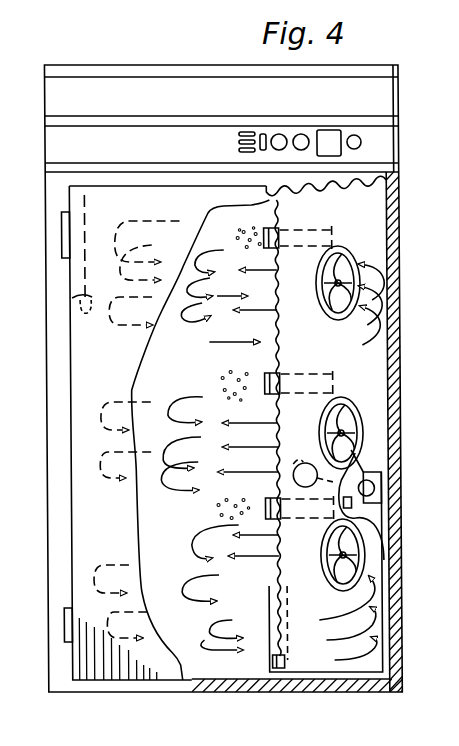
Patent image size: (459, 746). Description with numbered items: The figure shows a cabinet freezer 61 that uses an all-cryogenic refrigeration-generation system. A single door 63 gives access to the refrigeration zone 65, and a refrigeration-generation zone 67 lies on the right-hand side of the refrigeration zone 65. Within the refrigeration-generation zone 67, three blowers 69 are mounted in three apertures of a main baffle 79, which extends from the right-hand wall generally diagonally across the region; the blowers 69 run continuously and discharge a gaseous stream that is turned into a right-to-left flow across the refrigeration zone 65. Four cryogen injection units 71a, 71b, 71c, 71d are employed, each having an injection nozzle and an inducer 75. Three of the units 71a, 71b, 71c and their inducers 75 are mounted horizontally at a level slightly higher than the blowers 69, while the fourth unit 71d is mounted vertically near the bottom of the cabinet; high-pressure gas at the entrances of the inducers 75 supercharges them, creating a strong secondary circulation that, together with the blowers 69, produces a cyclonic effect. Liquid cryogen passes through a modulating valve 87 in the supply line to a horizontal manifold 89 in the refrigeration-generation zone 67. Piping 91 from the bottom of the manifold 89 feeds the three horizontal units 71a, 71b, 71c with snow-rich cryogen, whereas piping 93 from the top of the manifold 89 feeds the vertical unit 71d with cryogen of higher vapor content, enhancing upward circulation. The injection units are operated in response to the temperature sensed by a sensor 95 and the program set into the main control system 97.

The cabinet freezer 61 is at (72, 63).
The door 63 is at (115, 363).
The refrigeration zone 65 is at (183, 376).
The refrigeration-generation zone 67 is at (390, 316).
The blowers 69 is at (357, 265).
The cryogen injection unit 71a is at (345, 221).
The cryogen injection unit 71b is at (347, 381).
The cryogen injection unit 71c is at (340, 510).
The cryogen injection unit 71d is at (272, 662).
The inducer 75 is at (267, 228).
The main baffle 79 is at (317, 354).
The modulating valve 87 is at (310, 460).
The horizontal manifold 89 is at (372, 488).
The piping 91 is at (360, 508).
The piping 93 is at (378, 472).
The sensor 95 is at (72, 298).
The main control system 97 is at (303, 128).